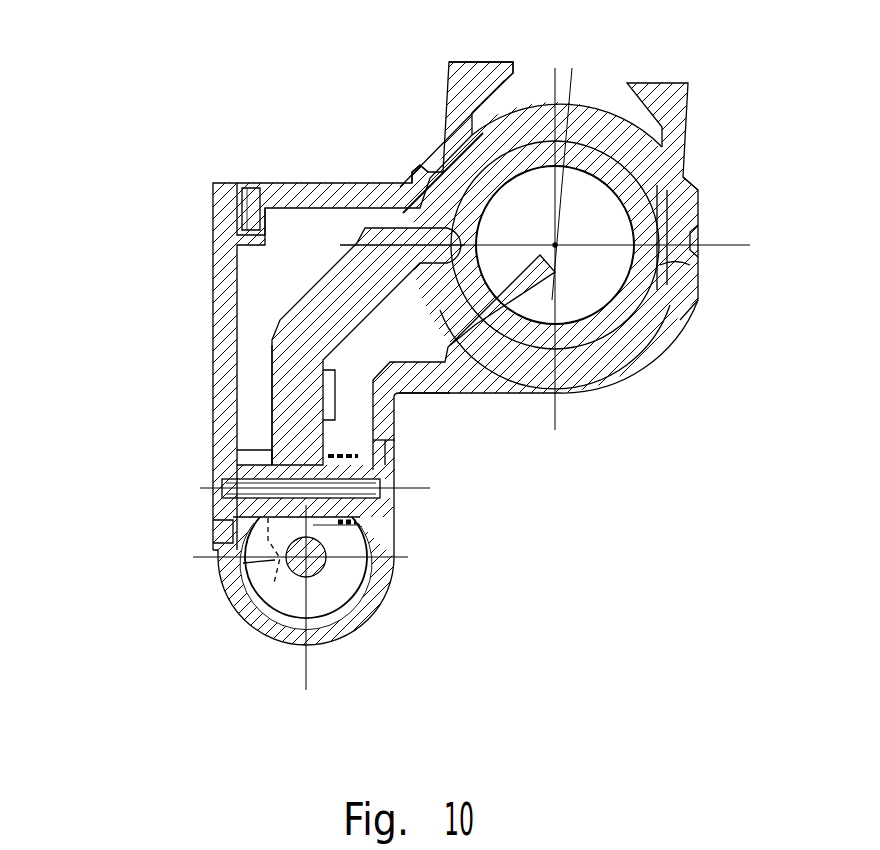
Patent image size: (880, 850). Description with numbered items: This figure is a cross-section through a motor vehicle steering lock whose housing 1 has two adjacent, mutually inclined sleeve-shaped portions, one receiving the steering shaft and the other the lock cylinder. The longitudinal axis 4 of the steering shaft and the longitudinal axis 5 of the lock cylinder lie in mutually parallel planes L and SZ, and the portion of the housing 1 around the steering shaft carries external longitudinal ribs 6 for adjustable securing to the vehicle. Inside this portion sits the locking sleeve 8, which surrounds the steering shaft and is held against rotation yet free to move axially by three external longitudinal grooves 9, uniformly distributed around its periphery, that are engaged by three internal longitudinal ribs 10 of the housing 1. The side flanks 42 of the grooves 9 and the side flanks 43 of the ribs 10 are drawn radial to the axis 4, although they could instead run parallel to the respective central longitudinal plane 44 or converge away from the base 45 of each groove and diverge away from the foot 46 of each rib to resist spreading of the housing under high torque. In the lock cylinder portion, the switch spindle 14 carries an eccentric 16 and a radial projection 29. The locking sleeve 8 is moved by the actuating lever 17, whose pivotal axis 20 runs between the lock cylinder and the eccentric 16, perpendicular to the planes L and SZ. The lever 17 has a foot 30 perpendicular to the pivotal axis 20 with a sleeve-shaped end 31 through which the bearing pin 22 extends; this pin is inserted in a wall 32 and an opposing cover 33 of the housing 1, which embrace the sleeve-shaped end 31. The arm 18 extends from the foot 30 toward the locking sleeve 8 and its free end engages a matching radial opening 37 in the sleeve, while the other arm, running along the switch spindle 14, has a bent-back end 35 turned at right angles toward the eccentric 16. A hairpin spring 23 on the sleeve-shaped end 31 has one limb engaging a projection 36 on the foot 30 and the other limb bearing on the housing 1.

The housing 1 is at (280, 190).
The longitudinal axis of the steering shaft 4 is at (558, 250).
The longitudinal axis of the lock cylinder 5 is at (312, 580).
The external longitudinal ribs 6 is at (480, 100).
The locking sleeve 8 is at (635, 355).
The external longitudinal grooves 9 is at (655, 230).
The internal longitudinal ribs 10 is at (697, 270).
The switch spindle 14 is at (272, 622).
The eccentric 16 is at (283, 553).
The actuating lever 17 is at (272, 316).
The arm 18 is at (405, 215).
The pivotal axis 20 is at (413, 490).
The bearing pin 22 is at (245, 470).
The hairpin spring 23 is at (396, 455).
The radial projection 29 is at (343, 588).
The foot 30 is at (290, 395).
The sleeve-shaped end 31 is at (245, 510).
The wall 32 is at (385, 408).
The cover 33 is at (228, 245).
The bent-back end 35 is at (316, 528).
The projection 36 is at (338, 385).
The radial opening 37 is at (418, 176).
The side flanks of the longitudinal grooves 42 is at (690, 180).
The side flanks of the longitudinal ribs 43 is at (700, 232).
The central longitudinal plane 44 is at (760, 245).
The base of the groove 45 is at (505, 365).
The foot of the rib 46 is at (498, 350).
The plane L is at (553, 413).
The plane SZ is at (303, 668).